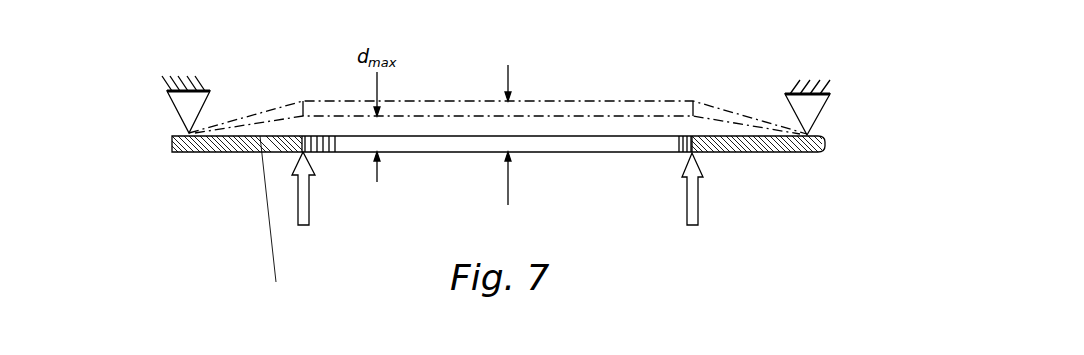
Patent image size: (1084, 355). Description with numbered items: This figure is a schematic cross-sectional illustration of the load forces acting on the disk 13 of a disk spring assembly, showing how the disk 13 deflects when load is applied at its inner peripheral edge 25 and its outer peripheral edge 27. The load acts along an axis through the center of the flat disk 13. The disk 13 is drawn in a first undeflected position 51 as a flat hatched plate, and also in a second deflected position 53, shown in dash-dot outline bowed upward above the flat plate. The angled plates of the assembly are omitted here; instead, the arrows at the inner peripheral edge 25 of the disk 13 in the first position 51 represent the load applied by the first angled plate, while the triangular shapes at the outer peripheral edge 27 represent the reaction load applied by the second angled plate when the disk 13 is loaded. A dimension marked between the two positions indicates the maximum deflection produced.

The disk 13 is at (744, 162).
The inner peripheral edge 25 is at (310, 154).
The outer peripheral edge 27 is at (806, 156).
The first undeflected position 51 is at (242, 162).
The second deflected position 53 is at (245, 104).